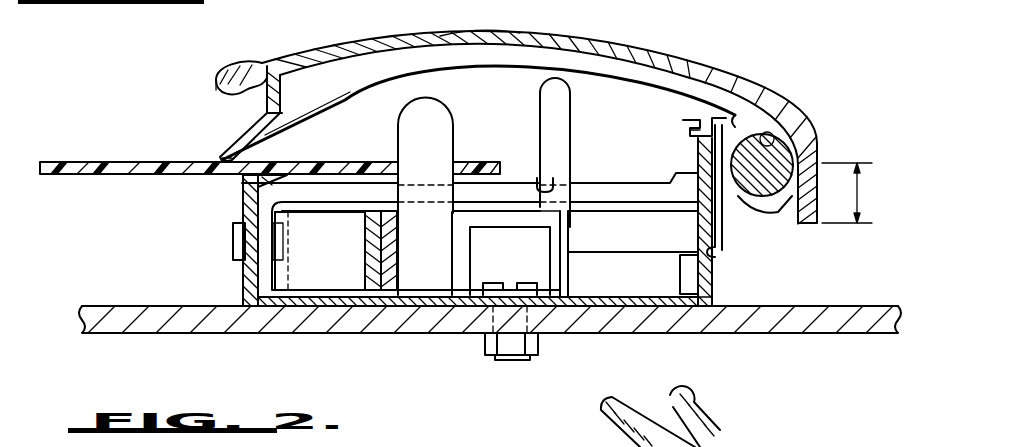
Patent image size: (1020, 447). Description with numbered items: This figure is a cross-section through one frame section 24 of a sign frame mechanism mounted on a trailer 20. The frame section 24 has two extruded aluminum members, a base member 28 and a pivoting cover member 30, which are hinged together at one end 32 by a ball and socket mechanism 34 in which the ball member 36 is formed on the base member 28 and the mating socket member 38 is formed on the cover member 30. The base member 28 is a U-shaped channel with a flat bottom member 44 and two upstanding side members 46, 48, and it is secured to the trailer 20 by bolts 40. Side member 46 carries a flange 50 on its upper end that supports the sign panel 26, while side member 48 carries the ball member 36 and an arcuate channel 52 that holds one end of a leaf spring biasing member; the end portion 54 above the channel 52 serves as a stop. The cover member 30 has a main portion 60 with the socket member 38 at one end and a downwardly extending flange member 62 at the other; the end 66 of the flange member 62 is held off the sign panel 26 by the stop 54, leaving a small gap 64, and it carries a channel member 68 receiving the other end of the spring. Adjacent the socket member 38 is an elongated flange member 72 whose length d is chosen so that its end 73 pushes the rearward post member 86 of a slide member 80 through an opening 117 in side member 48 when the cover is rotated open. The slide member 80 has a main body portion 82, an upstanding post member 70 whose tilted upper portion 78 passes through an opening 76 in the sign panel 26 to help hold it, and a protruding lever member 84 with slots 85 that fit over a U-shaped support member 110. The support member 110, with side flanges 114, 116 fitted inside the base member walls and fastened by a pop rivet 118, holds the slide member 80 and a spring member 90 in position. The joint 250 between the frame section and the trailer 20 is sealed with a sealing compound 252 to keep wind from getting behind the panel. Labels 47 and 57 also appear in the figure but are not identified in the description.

The trailer 20 is at (130, 320).
The frame section 24 is at (190, 72).
The sign panel 26 is at (62, 160).
The base member 28 is at (362, 306).
The cover member 30 is at (672, 55).
The end 32 is at (832, 94).
The ball and socket mechanism 34 is at (790, 218).
The ball member 36 is at (770, 190).
The socket member 38 is at (770, 132).
The bolts 40 is at (507, 356).
The flat bottom member 44 is at (428, 302).
The side member 46 is at (250, 272).
The leaf spring 47 is at (346, 100).
The side member 48 is at (713, 280).
The flange 50 is at (242, 184).
The channel 52 is at (696, 128).
The stop 54 is at (737, 108).
The keeper hook 57 is at (690, 128).
The main portion 60 is at (471, 33).
The flange member 62 is at (256, 86).
The gap 64 is at (200, 148).
The end 66 is at (222, 150).
The channel member 68 is at (253, 142).
The post member 70 is at (430, 228).
The flange member 72 is at (826, 185).
The end 73 is at (808, 224).
The openings 76 is at (376, 160).
The upper portion 78 is at (455, 125).
The slide member 80 is at (568, 222).
The main body portion 82 is at (545, 220).
The lever member 84 is at (560, 106).
The slots 85 is at (541, 184).
The post member 86 is at (640, 253).
The spring member 90 is at (323, 265).
The support member 110 is at (265, 247).
The side flange 114 is at (257, 307).
The side flange 116 is at (675, 257).
The opening 117 is at (712, 246).
The pop rivet 118 is at (233, 229).
The joint 250 is at (700, 303).
The sealing compound 252 is at (717, 308).